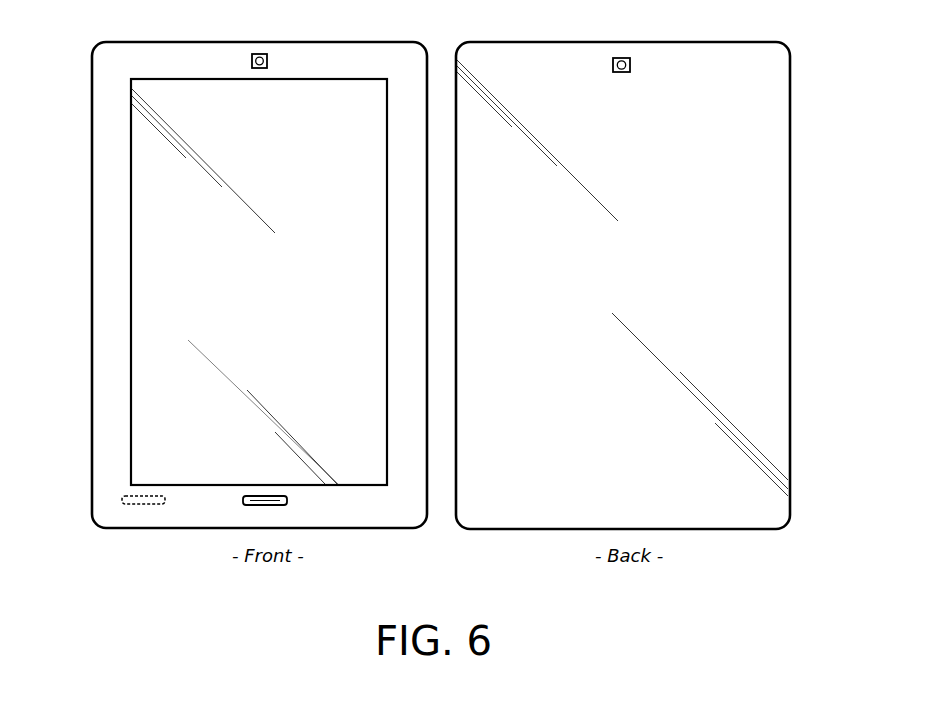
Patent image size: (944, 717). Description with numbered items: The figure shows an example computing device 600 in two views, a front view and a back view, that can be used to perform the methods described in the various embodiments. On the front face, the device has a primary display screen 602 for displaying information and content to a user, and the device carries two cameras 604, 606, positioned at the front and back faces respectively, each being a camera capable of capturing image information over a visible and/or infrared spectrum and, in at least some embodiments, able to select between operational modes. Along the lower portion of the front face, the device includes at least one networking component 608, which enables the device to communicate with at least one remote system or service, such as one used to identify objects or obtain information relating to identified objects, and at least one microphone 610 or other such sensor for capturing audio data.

The computing device 600 is at (822, 92).
The primary display screen 602 is at (131, 197).
The camera 604 is at (259, 54).
The camera 606 is at (614, 57).
The networking component 608 is at (142, 505).
The microphone 610 is at (252, 507).